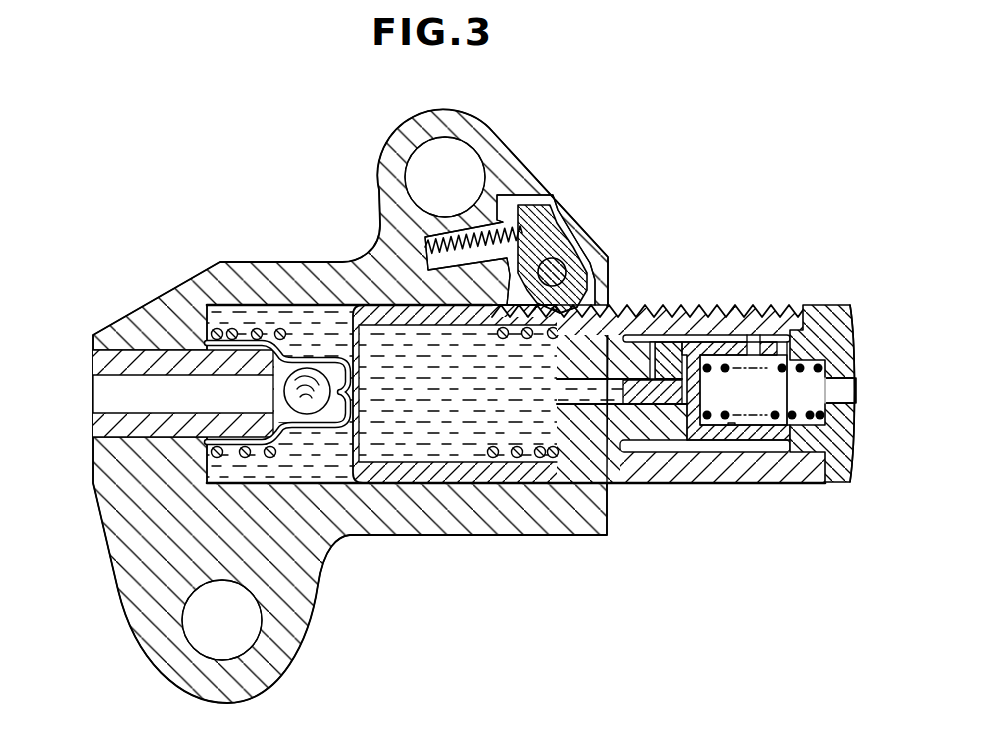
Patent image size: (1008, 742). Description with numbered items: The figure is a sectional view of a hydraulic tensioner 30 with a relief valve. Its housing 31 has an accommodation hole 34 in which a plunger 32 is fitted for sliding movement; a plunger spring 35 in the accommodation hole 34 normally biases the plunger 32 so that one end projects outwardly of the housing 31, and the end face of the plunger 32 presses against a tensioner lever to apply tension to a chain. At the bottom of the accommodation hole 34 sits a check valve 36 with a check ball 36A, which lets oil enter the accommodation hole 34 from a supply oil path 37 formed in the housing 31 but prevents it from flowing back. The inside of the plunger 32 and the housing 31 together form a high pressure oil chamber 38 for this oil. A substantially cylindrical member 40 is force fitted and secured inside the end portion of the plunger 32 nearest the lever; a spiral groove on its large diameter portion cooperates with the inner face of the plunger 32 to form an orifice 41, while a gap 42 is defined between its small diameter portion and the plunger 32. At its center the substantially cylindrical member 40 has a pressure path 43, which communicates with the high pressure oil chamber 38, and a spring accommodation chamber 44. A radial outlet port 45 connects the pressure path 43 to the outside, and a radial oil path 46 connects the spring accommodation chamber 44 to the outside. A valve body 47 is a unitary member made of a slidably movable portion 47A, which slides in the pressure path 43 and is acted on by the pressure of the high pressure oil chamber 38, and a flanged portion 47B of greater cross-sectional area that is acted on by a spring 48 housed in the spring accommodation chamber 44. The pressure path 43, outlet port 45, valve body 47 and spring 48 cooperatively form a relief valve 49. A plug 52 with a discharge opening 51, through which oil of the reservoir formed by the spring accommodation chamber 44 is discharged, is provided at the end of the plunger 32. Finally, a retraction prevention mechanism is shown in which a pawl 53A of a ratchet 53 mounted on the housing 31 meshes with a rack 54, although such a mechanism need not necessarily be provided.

The hydraulic tensioner 30 is at (507, 131).
The housing 31 is at (392, 152).
The plunger 32 is at (374, 306).
The accommodation hole 34 is at (283, 300).
The plunger spring 35 is at (252, 328).
The check valve 36 is at (358, 393).
The check ball 36A is at (300, 403).
The supply oil path 37 is at (105, 395).
The high pressure oil chamber 38 is at (428, 398).
The substantially cylindrical member 40 is at (597, 430).
The orifice 41 is at (611, 483).
The gap 42 is at (737, 335).
The pressure path 43 is at (557, 397).
The spring accommodation chamber 44 is at (733, 425).
The outlet port 45 is at (653, 353).
The oil path 46 is at (757, 347).
The valve body 47 is at (667, 417).
The slidably movable portion 47A is at (637, 397).
The flanged portion 47B is at (693, 423).
The spring 48 is at (773, 417).
The relief valve 49 is at (698, 303).
The discharge opening 51 is at (843, 393).
The plug 52 is at (855, 440).
The ratchet 53 is at (543, 217).
The pawl 53A is at (565, 295).
The rack 54 is at (797, 305).